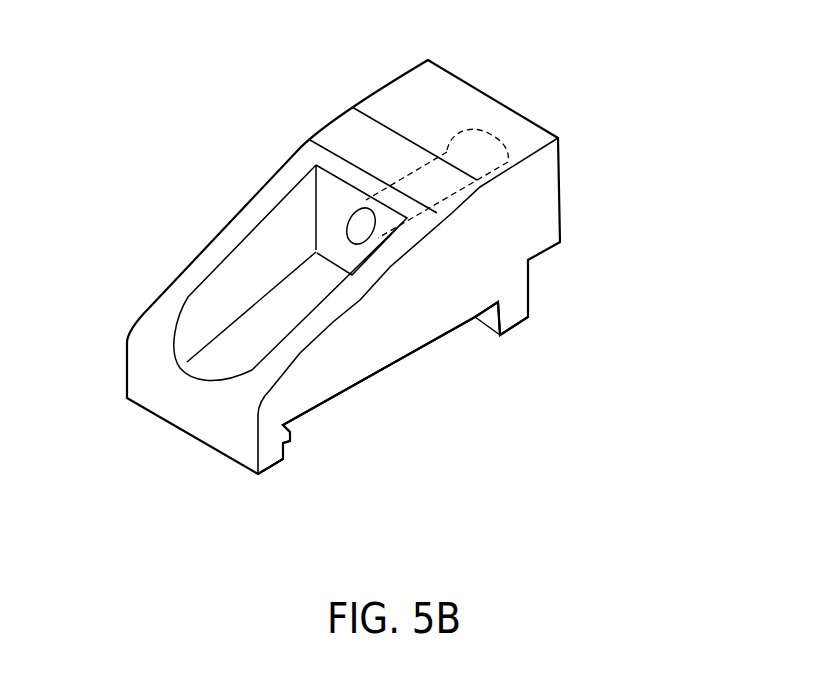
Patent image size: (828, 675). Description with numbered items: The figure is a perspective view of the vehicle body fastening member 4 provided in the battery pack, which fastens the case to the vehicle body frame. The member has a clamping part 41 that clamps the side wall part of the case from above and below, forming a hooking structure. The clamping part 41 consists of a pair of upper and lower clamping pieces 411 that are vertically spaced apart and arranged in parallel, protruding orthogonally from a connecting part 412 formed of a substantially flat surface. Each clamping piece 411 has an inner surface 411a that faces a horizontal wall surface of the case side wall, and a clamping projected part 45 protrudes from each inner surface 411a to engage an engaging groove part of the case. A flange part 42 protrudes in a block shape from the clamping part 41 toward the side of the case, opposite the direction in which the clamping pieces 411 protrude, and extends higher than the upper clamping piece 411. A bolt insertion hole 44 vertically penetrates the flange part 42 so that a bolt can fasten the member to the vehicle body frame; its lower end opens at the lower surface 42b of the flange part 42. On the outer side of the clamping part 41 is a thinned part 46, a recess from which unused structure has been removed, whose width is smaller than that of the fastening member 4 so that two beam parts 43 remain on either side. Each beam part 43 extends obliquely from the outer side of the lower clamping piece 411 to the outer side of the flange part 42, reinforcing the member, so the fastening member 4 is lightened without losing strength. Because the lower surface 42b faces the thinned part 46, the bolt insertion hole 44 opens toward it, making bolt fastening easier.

The vehicle body fastening member 4 is at (188, 82).
The clamping part 41 is at (557, 413).
The clamping piece 411 is at (283, 462).
The inner surface 411a is at (288, 452).
The connecting part 412 is at (392, 364).
The flange part 42 is at (553, 185).
The lower surface 42b is at (333, 190).
The beam part 43 is at (333, 313).
The bolt insertion hole 44 is at (447, 150).
The clamping projected part 45 is at (290, 432).
The thinned part 46 is at (210, 315).